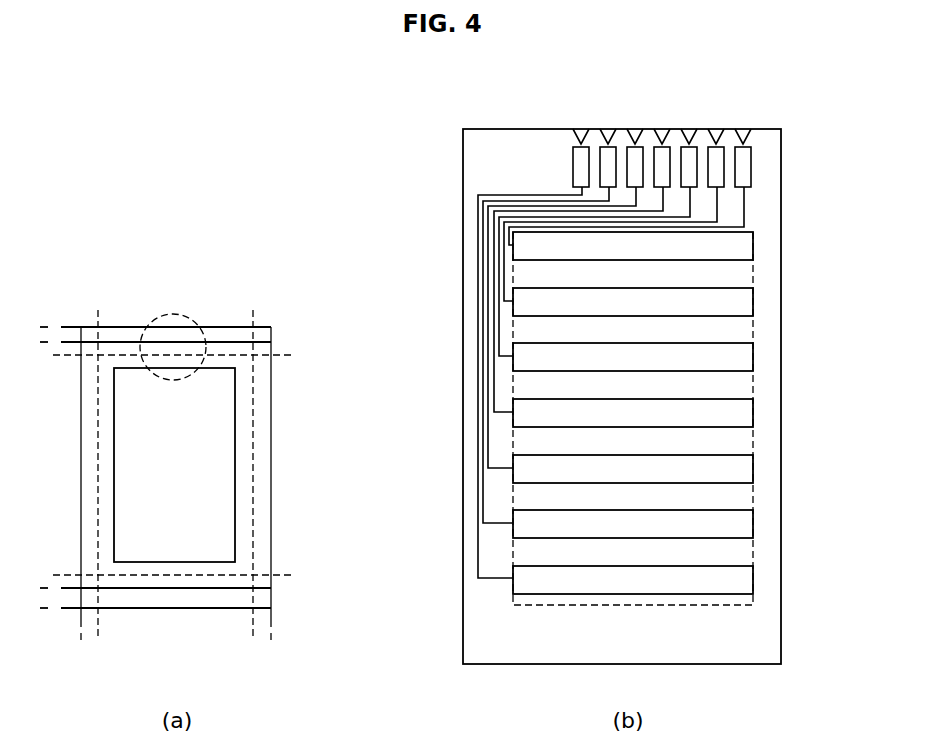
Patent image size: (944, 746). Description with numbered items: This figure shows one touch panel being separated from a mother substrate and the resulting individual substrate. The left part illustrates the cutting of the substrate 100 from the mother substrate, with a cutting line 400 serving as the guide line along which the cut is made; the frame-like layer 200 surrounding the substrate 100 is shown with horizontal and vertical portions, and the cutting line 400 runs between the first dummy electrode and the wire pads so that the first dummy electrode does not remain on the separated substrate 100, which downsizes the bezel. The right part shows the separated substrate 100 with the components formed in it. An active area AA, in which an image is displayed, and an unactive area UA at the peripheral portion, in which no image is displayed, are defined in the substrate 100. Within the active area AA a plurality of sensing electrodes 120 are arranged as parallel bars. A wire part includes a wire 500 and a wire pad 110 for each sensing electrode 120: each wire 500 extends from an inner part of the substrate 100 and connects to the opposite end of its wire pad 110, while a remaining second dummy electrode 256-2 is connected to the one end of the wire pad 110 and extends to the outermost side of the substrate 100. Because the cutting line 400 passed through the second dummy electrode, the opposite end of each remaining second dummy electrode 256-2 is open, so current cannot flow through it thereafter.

The substrate 100 is at (235, 483).
The wire pad 110 is at (751, 165).
The sensing electrode 120 is at (750, 246).
The protective film / frame layer 200 is at (127, 342).
The remaining second dummy electrode 256-2 is at (742, 133).
The cutting line 400 is at (253, 312).
The wire 500 is at (478, 229).
The active area AA is at (748, 275).
The unactive area UA is at (770, 356).